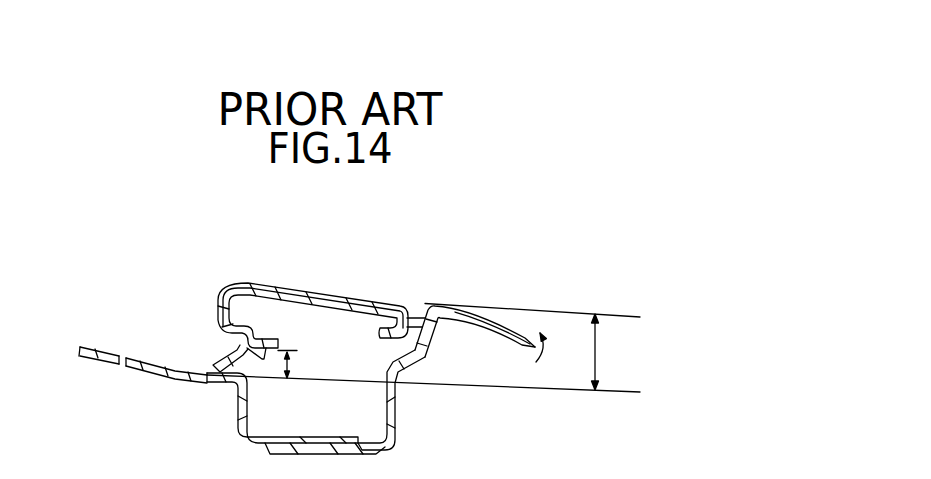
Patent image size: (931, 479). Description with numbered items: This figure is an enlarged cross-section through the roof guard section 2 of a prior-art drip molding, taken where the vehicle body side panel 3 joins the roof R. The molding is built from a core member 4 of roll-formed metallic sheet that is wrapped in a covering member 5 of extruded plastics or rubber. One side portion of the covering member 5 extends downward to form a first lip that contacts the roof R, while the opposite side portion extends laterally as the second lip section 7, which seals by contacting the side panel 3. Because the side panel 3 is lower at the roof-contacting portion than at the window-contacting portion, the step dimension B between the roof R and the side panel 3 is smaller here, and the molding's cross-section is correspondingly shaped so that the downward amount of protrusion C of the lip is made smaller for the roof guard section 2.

The roof guard section 2 is at (310, 291).
The side panel 3 is at (432, 346).
The core member 4 is at (344, 306).
The covering member 5 is at (266, 283).
The second lip section 7 is at (421, 305).
The roof R is at (145, 363).
The step dimension B is at (423, 348).
The amount of protrusion C is at (295, 363).